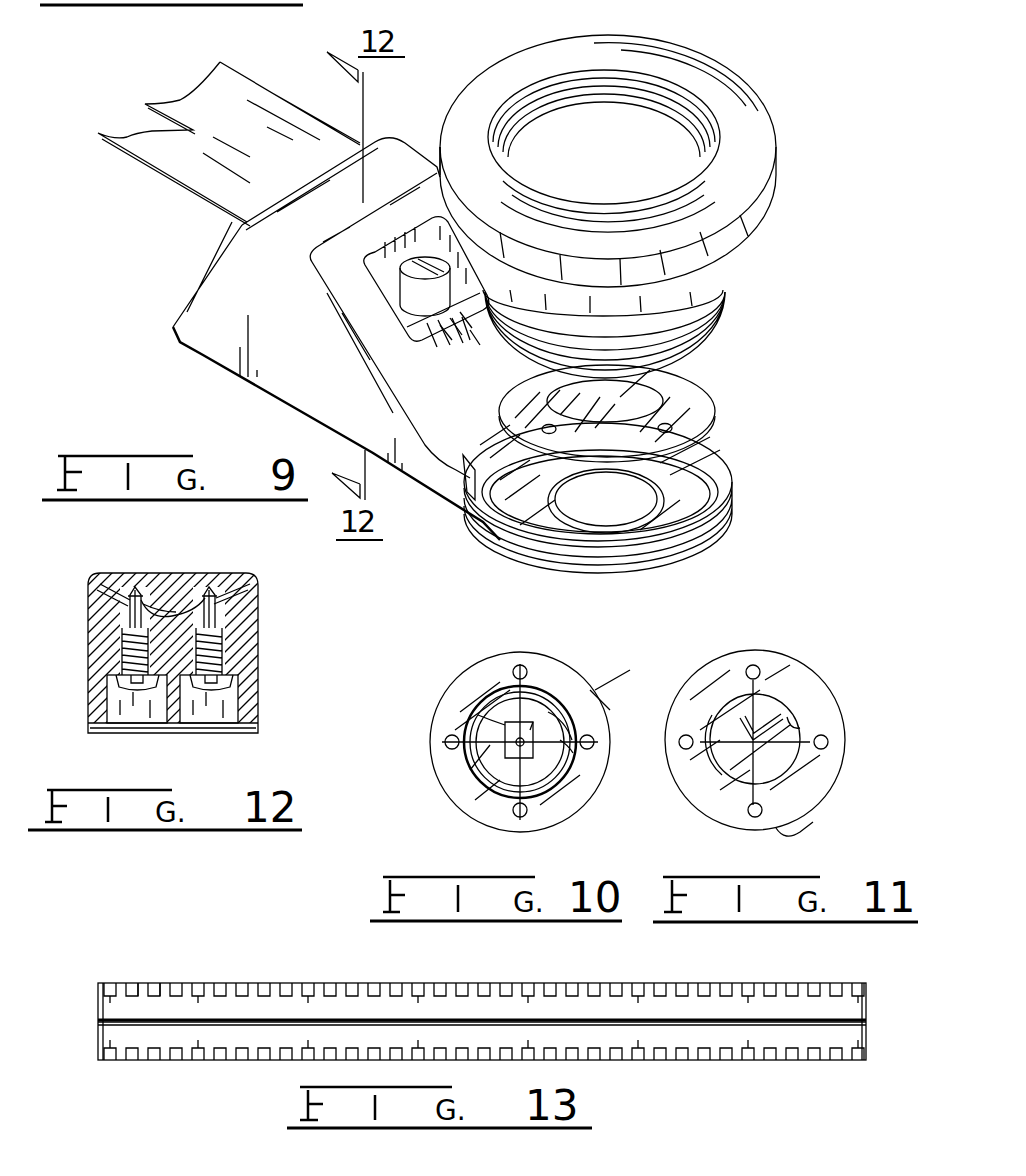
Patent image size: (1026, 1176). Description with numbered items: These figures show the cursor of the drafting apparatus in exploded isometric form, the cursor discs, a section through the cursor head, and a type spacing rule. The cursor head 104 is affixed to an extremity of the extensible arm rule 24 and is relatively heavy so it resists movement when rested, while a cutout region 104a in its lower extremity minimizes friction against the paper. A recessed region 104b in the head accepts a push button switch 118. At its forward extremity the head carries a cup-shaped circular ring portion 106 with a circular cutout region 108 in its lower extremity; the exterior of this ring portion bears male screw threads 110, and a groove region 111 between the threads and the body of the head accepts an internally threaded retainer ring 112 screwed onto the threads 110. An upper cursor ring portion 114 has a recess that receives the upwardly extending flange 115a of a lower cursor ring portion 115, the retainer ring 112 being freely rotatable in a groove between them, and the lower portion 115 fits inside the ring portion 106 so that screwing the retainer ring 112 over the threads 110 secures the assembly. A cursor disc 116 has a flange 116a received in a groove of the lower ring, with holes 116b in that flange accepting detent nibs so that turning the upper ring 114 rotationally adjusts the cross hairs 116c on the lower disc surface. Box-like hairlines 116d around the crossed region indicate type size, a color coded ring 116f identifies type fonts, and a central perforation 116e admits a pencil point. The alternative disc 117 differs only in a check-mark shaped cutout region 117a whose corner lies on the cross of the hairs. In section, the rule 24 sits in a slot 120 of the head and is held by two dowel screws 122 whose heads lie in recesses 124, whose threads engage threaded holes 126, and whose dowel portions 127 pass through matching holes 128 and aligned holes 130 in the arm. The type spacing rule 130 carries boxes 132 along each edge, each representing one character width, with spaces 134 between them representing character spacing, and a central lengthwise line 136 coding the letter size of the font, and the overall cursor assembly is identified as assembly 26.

In FIG. 9, the extensible arm rule 24 is at (236, 119).
In FIG. 12, the extensible arm rule 24 is at (180, 600).
In FIG. 9, the measuring assembly 26 is at (470, 52).
In FIG. 9, the cursor head 104 is at (280, 287).
In FIG. 12, the cursor head 104 is at (95, 572).
In FIG. 9, the cutout region 104a is at (277, 397).
In FIG. 12, the cutout region 104a is at (160, 730).
In FIG. 9, the recessed region 104b is at (427, 258).
In FIG. 9, the circular ring portion 106 is at (687, 533).
In FIG. 9, the circular cutout region 108 is at (568, 527).
In FIG. 9, the male screw threads 110 is at (705, 532).
In FIG. 9, the cutout or groove region 111 is at (447, 483).
In FIG. 9, the retainer ring 112 is at (763, 214).
In FIG. 9, the upper cursor ring portion 114 is at (757, 94).
In FIG. 9, the lower cursor ring portion 115 is at (722, 340).
In FIG. 9, the upwardly extending flange 115a is at (727, 290).
In FIG. 9, the cursor disc 116 is at (703, 367).
In FIG. 10, the cursor disc 116 is at (522, 652).
In FIG. 9, the cursor disc flange 116a is at (703, 392).
In FIG. 10, the cursor disc flange 116a is at (545, 812).
In FIG. 9, the holes 116b is at (675, 430).
In FIG. 10, the holes 116b is at (535, 808).
In FIG. 10, the cross hairs 116c is at (552, 720).
In FIG. 10, the box-like hairlines 116d is at (507, 725).
In FIG. 10, the central perforation 116e is at (530, 730).
In FIG. 10, the color coded ring 116f is at (573, 753).
In FIG. 11, the disc 117 is at (805, 825).
In FIG. 11, the cutout region 117a is at (787, 717).
In FIG. 9, the push button switch 118 is at (400, 268).
In FIG. 12, the slot 120 is at (178, 610).
In FIG. 12, the dowel screws 122 is at (120, 670).
In FIG. 12, the recesses 124 is at (135, 703).
In FIG. 12, the threaded holes 126 is at (110, 642).
In FIG. 12, the dowel portions 127 is at (122, 625).
In FIG. 12, the matching holes 128 is at (130, 590).
In FIG. 12, the holes / type spacing rule 130 is at (141, 598).
In FIG. 13, the holes / type spacing rule 130 is at (274, 978).
In FIG. 13, the boxes 132 is at (112, 985).
In FIG. 13, the space 134 is at (167, 985).
In FIG. 13, the line 136 is at (185, 1023).